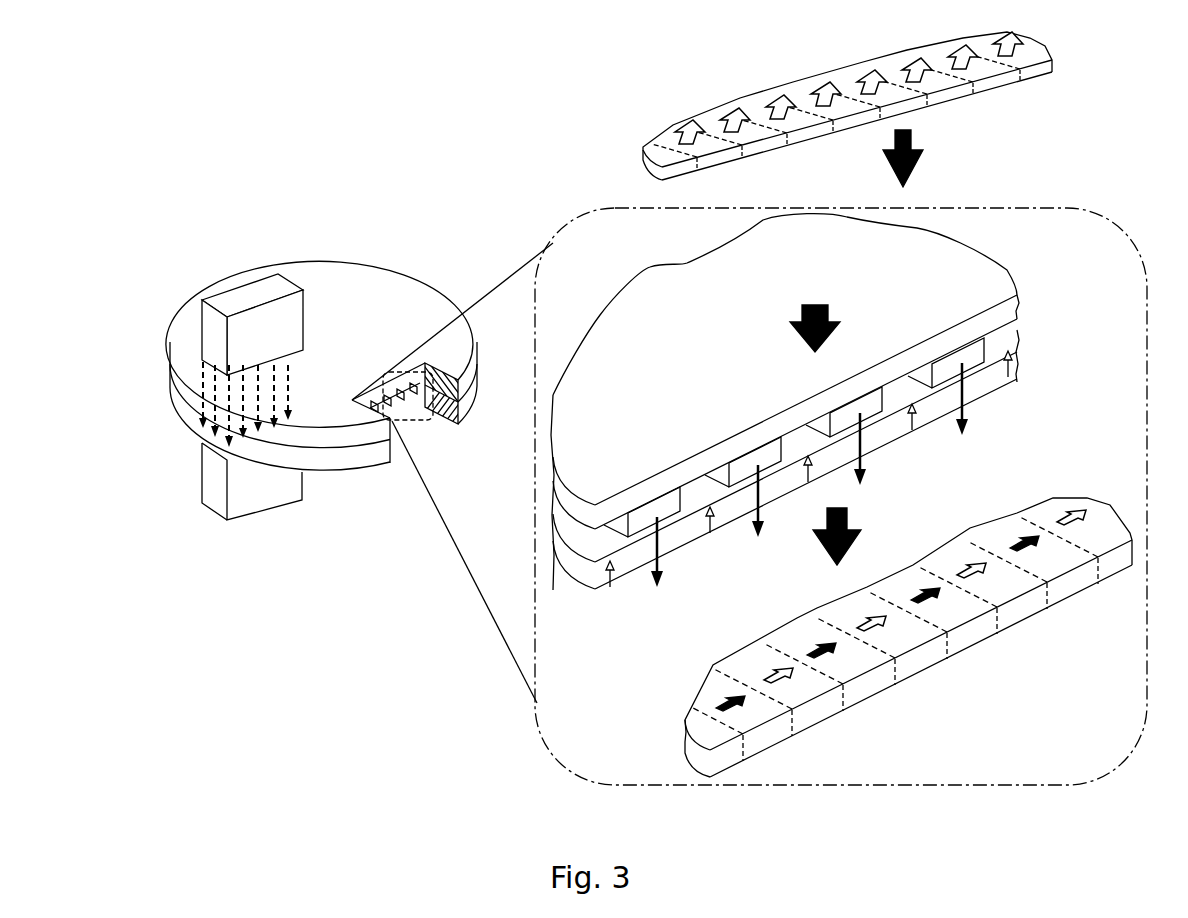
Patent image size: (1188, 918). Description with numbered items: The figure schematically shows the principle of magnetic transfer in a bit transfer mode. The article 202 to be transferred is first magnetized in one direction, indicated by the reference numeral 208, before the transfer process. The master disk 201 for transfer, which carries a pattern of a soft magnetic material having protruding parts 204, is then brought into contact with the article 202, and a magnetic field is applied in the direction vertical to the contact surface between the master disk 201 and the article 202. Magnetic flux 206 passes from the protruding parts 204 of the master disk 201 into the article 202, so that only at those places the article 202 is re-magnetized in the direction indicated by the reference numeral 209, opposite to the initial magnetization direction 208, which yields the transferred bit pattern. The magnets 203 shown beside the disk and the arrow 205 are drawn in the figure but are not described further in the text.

The master disk for transfer 201 is at (367, 265).
The article to be transferred 202 is at (350, 462).
The magnet 203 is at (255, 293).
The protruding parts 204 is at (872, 410).
The pressing direction arrow 205 is at (780, 321).
The magnetic flux 206 is at (862, 427).
The direction of initial magnetization 208 is at (883, 623).
The direction of transferred magnetization 209 is at (943, 597).